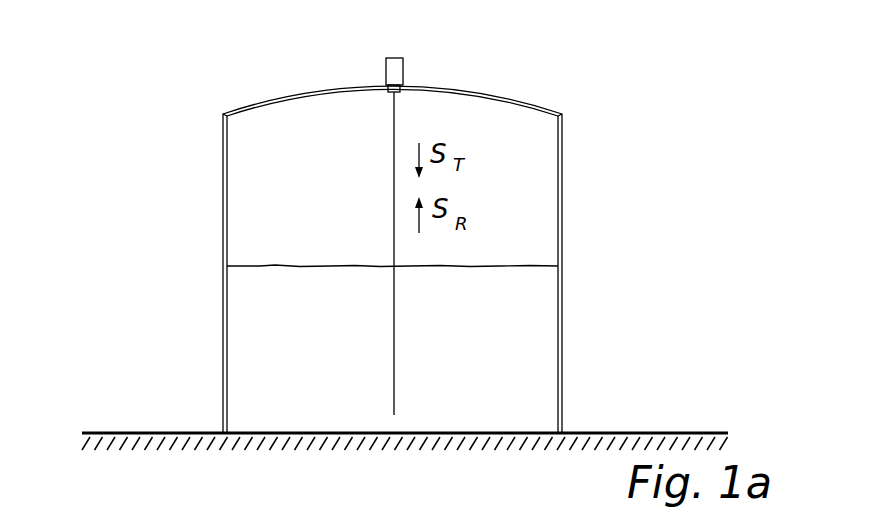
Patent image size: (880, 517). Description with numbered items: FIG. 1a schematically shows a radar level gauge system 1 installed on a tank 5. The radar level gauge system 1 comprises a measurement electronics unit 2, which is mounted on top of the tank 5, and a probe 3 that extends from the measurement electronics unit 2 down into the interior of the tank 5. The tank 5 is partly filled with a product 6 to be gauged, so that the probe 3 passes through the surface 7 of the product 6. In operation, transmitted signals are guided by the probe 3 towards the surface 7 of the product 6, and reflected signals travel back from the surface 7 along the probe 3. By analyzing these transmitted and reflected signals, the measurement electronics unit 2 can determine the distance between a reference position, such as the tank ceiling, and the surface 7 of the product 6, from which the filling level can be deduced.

The radar level gauge system 1 is at (396, 209).
The measurement electronics unit 2 is at (386, 70).
The probe 3 is at (395, 128).
The tank 5 is at (565, 145).
The product 6 is at (540, 338).
The surface 7 is at (541, 266).